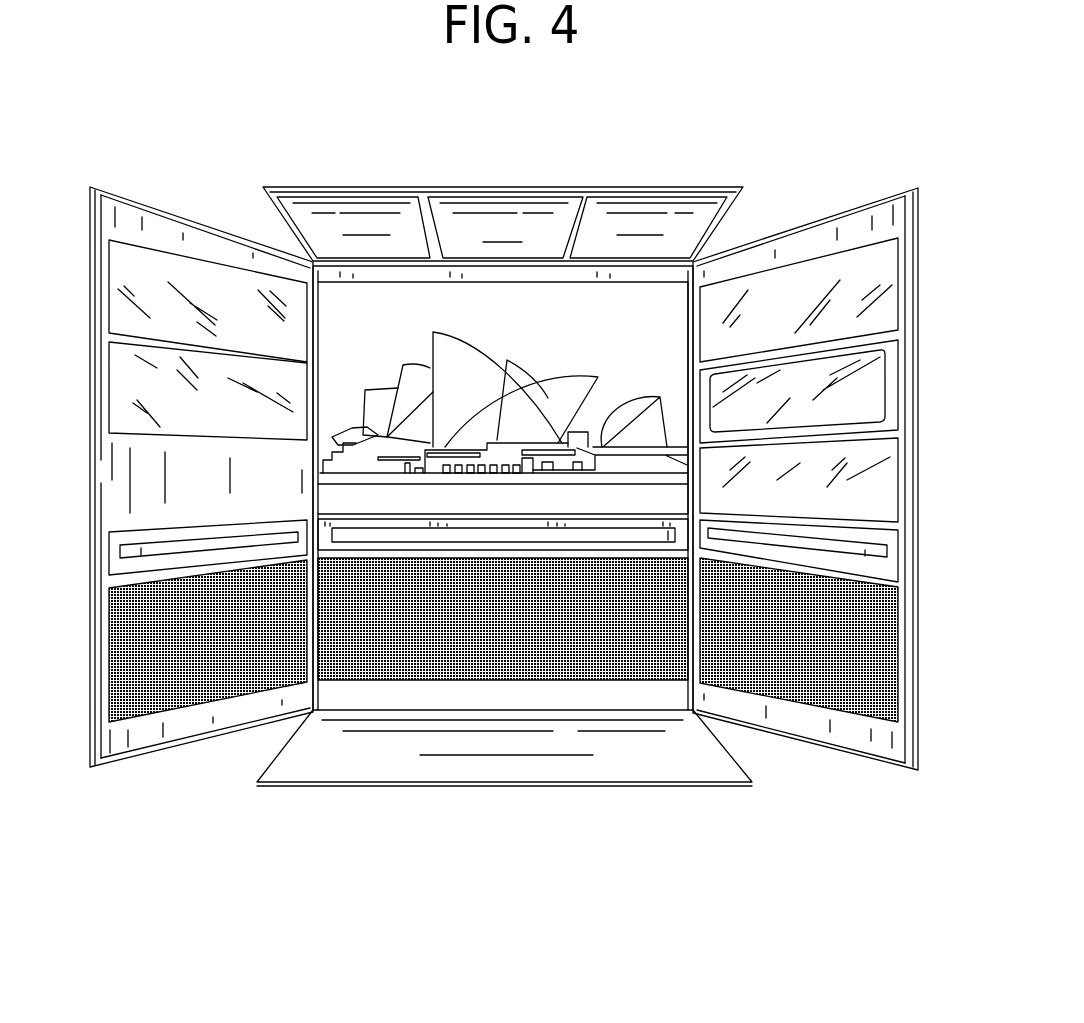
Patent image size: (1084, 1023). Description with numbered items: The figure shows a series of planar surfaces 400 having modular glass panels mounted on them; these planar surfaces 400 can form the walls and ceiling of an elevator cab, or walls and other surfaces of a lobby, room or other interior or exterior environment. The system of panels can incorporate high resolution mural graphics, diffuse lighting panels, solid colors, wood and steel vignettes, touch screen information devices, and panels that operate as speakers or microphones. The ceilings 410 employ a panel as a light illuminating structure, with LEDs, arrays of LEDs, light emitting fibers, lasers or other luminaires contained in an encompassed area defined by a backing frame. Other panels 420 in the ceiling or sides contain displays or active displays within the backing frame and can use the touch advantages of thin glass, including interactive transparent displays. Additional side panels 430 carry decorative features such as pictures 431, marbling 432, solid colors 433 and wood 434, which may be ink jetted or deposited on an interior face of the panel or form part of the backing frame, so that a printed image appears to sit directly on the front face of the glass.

The planar surfaces 400 is at (503, 498).
The ceilings 410 is at (643, 218).
The side panels with displays 420 is at (893, 385).
The side panels 430 is at (178, 467).
The pictures 431 is at (655, 305).
The marbling 432 is at (185, 283).
The solid colors 433 is at (266, 423).
The wood 434 is at (885, 496).